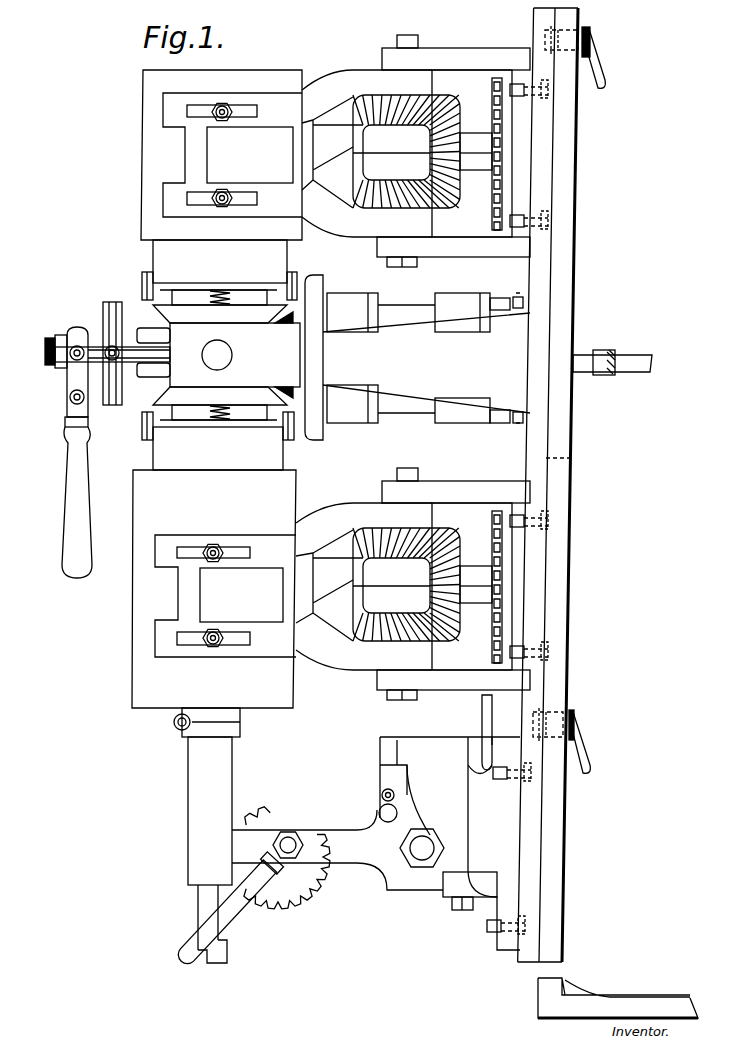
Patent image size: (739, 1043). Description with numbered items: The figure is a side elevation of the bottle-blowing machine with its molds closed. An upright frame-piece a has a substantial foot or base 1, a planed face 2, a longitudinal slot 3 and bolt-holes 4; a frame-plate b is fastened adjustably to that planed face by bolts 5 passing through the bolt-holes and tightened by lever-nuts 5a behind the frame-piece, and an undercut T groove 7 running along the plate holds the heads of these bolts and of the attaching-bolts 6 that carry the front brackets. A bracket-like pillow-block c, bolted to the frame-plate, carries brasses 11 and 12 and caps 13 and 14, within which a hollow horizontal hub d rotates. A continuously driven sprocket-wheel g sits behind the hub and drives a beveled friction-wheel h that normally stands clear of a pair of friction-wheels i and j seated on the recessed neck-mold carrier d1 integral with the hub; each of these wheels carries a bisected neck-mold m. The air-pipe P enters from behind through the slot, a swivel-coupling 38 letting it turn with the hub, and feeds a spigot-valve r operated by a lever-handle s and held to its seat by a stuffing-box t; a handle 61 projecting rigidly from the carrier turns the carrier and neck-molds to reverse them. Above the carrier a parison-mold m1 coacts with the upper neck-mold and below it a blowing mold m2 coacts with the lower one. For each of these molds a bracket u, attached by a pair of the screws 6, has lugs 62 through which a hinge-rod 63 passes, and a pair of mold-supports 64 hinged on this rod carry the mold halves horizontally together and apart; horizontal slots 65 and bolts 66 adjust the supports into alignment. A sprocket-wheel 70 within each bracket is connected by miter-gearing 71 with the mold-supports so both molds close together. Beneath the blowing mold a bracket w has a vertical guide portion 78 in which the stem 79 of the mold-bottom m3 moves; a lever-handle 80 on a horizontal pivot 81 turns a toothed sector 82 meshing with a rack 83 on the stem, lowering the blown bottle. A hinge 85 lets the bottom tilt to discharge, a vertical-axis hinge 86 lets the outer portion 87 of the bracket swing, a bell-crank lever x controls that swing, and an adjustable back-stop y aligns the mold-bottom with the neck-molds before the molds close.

The foot or base 1 is at (520, 997).
The planed face 2 is at (548, 437).
The longitudinal slot 3 is at (560, 290).
The bolt-holes 4 is at (590, 30).
The bolts 5 is at (545, 40).
The lever-nuts 5a is at (603, 66).
The attaching-bolts 6 is at (487, 928).
The T groove 7 is at (482, 714).
The brass 11 is at (327, 295).
The brass 12 is at (448, 296).
The cap 13 is at (352, 358).
The cap 14 is at (465, 312).
The swivel-coupling 38 is at (603, 375).
The handle 61 is at (217, 355).
The lugs 62 is at (453, 374).
The hinge-rod 63 is at (397, 41).
The mold-supports 64 is at (296, 157).
The horizontal slots 65 is at (256, 111).
The bolts 66 is at (224, 102).
The sprocket-wheels 70 is at (492, 95).
The miter-gearing 71 is at (476, 368).
The vertical guide portion 78 is at (210, 811).
The stem 79 is at (211, 968).
The lever-handle 80 is at (182, 953).
The horizontal pivot 81 is at (290, 838).
The toothed sector 82 is at (287, 863).
The rack 83 is at (226, 917).
The hinge 85 is at (174, 727).
The hinge 86 is at (470, 891).
The outer portion of bracket 87 is at (337, 850).
The frame-piece a is at (578, 485).
The frame-plate b is at (538, 19).
The pillow-block c is at (426, 363).
The hollow horizontal hub d is at (351, 359).
The neck-mold carrier d1 is at (235, 355).
The sprocket-wheel g is at (517, 296).
The beveled friction-wheel h is at (277, 393).
The friction-wheel i is at (223, 314).
The friction-wheel j is at (223, 397).
The neck-mold m is at (219, 355).
The parison-mold m1 is at (207, 155).
The blowing mold m2 is at (214, 589).
The mold-bottom m3 is at (227, 722).
The air-pipe P is at (620, 363).
The spigot-valve r is at (45, 349).
The lever-handle s is at (92, 440).
The stuffing-box t is at (150, 333).
The bracket u is at (472, 360).
The bracket w is at (494, 843).
The bell-crank lever x is at (376, 771).
The adjustable back-stop y is at (425, 843).